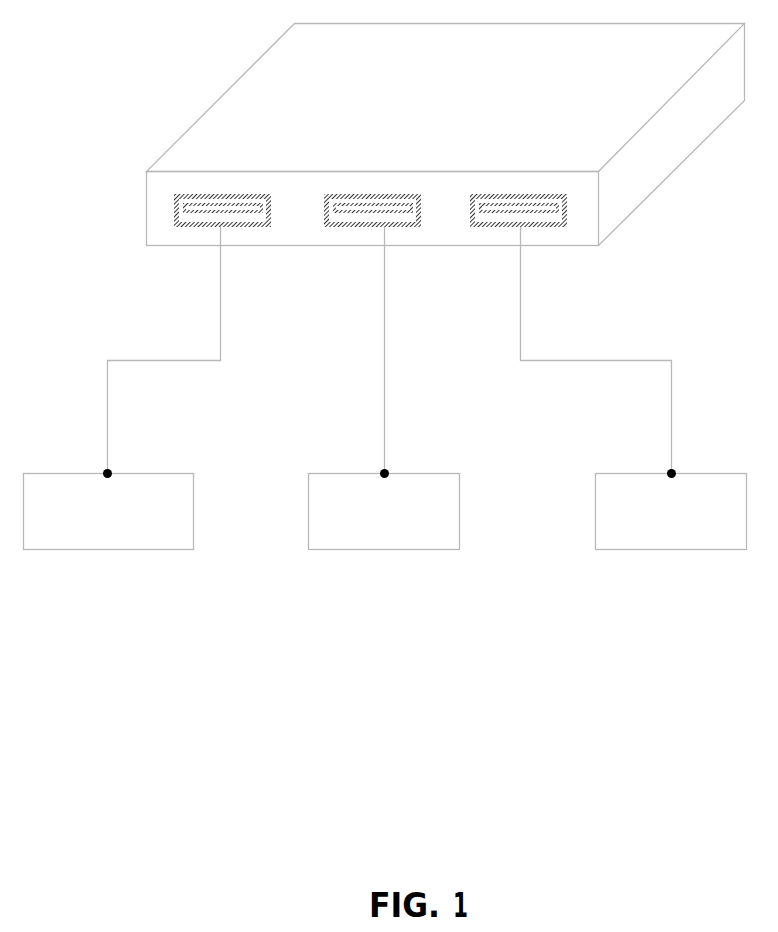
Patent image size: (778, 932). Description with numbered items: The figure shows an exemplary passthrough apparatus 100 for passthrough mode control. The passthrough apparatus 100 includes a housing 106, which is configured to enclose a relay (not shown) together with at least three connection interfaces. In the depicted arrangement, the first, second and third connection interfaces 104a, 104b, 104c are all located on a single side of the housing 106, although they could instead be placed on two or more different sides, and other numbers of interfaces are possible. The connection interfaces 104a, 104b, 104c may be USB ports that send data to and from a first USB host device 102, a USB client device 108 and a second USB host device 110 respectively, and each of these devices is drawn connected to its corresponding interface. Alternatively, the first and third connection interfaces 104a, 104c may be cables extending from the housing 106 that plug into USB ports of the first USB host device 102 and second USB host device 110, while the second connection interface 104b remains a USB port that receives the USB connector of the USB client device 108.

The passthrough apparatus 100 is at (467, 102).
The housing 106 is at (267, 82).
The first connection interface 104a is at (545, 212).
The second connection interface 104b is at (398, 212).
The third connection interface 104c is at (248, 212).
The first USB host device 102 is at (671, 509).
The USB client device 108 is at (384, 509).
The second USB host device 110 is at (109, 509).